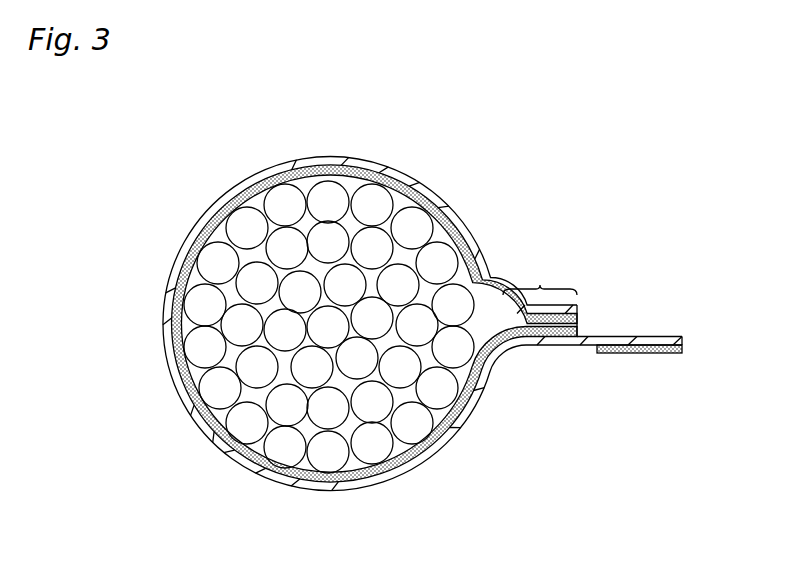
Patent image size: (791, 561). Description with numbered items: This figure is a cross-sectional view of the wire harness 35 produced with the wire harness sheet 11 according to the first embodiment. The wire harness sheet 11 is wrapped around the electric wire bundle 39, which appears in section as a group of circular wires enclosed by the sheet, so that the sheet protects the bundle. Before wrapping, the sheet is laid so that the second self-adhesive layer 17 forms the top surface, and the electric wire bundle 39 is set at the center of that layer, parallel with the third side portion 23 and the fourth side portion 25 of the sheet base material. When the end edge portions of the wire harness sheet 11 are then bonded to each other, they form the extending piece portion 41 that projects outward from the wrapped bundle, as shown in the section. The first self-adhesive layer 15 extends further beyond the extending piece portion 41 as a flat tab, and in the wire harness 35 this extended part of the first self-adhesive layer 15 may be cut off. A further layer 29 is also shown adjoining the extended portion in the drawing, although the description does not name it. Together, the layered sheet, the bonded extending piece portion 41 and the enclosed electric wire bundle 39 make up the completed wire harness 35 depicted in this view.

The wire harness sheet 11 is at (188, 437).
The wire harness 35 is at (200, 191).
The electric wire bundle 39 is at (328, 458).
The extending piece portion 41 is at (540, 279).
The third side portion 23 is at (580, 318).
The second self-adhesive layer 17 is at (498, 341).
The first self-adhesive layer 15 is at (637, 354).
The bonding layer 29 is at (638, 343).
The fourth side portion 25 is at (683, 340).